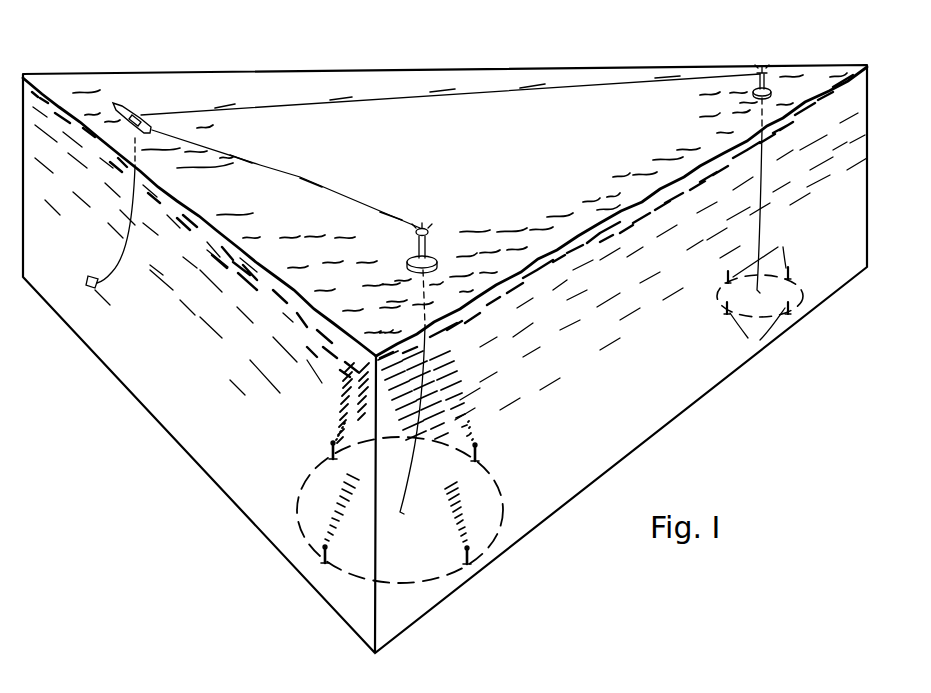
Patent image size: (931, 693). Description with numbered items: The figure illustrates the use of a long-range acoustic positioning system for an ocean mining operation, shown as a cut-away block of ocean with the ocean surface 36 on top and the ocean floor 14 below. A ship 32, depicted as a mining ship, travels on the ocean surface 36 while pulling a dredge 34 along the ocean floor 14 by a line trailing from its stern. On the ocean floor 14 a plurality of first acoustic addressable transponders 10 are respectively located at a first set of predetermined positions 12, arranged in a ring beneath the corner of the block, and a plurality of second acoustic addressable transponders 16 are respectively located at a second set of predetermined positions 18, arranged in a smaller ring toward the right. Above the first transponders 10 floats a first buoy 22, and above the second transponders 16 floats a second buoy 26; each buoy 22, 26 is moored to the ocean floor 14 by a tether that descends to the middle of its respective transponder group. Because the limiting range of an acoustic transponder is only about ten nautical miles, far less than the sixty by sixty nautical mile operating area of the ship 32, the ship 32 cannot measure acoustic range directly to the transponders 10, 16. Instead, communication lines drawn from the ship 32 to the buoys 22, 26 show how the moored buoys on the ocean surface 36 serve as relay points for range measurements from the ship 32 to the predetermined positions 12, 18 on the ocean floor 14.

The first acoustic addressable transponders 10 is at (323, 533).
The first set of predetermined positions 12 is at (330, 444).
The ocean floor 14 is at (422, 558).
The second acoustic addressable transponders 16 is at (767, 294).
The second set of predetermined positions 18 is at (724, 276).
The first buoy 22 is at (433, 243).
The second buoy 26 is at (765, 77).
The ship 32 is at (130, 108).
The dredge 34 is at (90, 285).
The ocean surface 36 is at (823, 79).